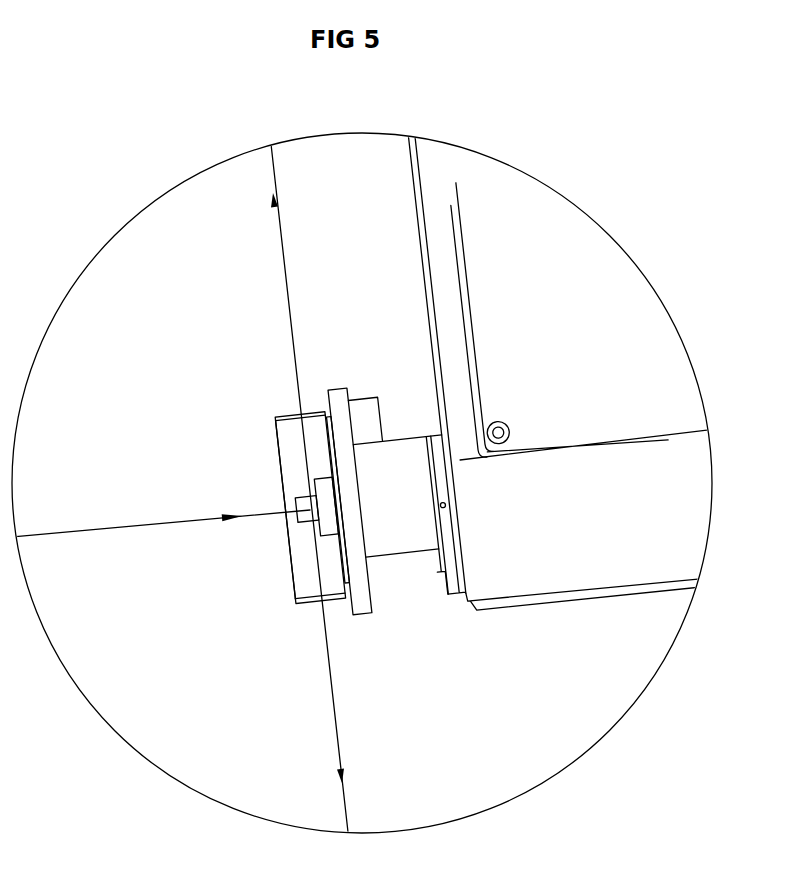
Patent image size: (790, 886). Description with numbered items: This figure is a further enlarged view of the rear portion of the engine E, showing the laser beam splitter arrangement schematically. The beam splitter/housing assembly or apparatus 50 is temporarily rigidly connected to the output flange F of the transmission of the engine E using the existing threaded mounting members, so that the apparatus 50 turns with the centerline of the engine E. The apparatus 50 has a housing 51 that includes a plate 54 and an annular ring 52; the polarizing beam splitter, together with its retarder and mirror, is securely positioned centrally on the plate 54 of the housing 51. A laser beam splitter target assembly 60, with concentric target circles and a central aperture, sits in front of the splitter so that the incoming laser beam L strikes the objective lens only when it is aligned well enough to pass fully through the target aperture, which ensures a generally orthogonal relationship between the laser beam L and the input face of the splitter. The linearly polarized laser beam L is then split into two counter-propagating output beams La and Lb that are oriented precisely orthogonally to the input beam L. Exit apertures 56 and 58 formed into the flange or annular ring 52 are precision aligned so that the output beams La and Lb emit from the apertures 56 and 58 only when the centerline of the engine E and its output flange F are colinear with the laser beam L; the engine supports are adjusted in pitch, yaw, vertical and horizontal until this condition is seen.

The beam splitter/housing assembly 50 is at (313, 500).
The housing 51 is at (293, 575).
The annular ring 52 is at (287, 412).
The plate 54 is at (333, 447).
The aperture 56 is at (298, 413).
The aperture 58 is at (323, 600).
The laser beam splitter target assembly 60 is at (305, 523).
The engine E is at (612, 600).
The output flange F is at (363, 615).
The laser beam L is at (120, 523).
The output beam La is at (335, 718).
The output beam Lb is at (285, 268).